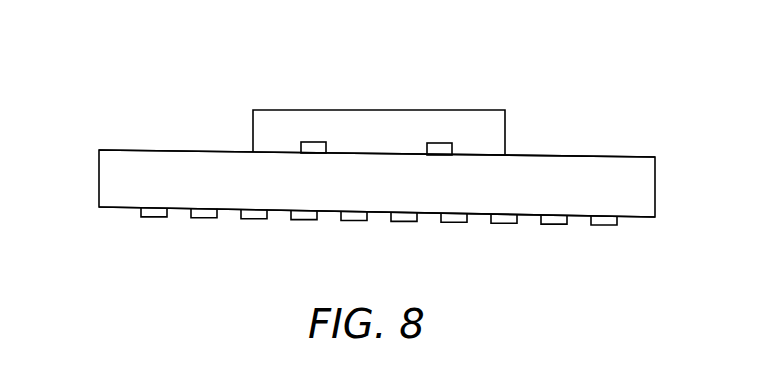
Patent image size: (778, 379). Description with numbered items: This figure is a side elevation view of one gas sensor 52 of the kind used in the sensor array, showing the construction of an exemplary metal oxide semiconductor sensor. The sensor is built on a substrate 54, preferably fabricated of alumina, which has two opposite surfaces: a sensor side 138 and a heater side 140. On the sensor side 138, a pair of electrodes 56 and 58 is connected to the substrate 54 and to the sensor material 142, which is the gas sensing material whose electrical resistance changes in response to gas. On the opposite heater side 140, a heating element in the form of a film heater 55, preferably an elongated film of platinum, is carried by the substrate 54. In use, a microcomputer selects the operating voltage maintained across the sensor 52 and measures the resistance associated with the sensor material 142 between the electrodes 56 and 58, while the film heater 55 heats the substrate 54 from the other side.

The gas sensor 52 is at (232, 76).
The substrate 54 is at (98, 180).
The film heater 55 is at (201, 218).
The electrode 56 is at (313, 142).
The electrode 58 is at (437, 143).
The sensor side 138 is at (168, 150).
The heater side 140 is at (118, 208).
The sensor material 142 is at (382, 112).